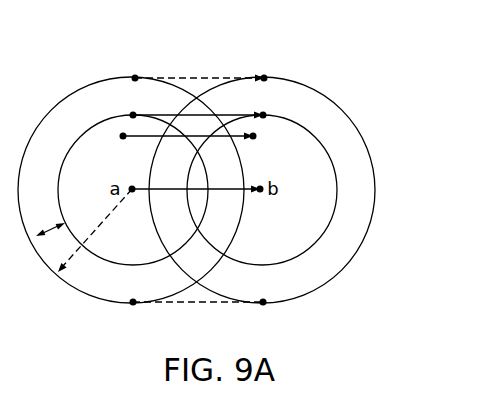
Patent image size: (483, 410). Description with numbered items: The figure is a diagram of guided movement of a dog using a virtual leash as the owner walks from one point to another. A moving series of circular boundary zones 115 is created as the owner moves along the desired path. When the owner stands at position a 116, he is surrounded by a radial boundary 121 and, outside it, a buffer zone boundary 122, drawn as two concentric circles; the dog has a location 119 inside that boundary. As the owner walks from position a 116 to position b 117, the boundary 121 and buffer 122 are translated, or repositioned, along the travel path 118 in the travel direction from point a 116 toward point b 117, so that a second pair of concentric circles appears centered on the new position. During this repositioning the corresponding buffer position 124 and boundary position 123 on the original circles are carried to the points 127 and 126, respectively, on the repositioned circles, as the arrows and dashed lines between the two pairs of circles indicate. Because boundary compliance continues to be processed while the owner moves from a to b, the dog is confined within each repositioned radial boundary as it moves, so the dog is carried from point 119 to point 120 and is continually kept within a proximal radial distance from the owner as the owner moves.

The circular boundary zones 115 is at (405, 148).
The position a 116 is at (115, 172).
The position b 117 is at (281, 172).
The travel path 118 is at (213, 186).
The dog location 119 is at (123, 136).
The repositioned dog point 120 is at (253, 136).
The radial boundary 121 is at (100, 225).
The buffer zone boundary 122 is at (46, 230).
The boundary position 123 is at (135, 78).
The buffer position 124 is at (133, 115).
The repositioned boundary point 126 is at (264, 78).
The repositioned buffer point 127 is at (263, 115).